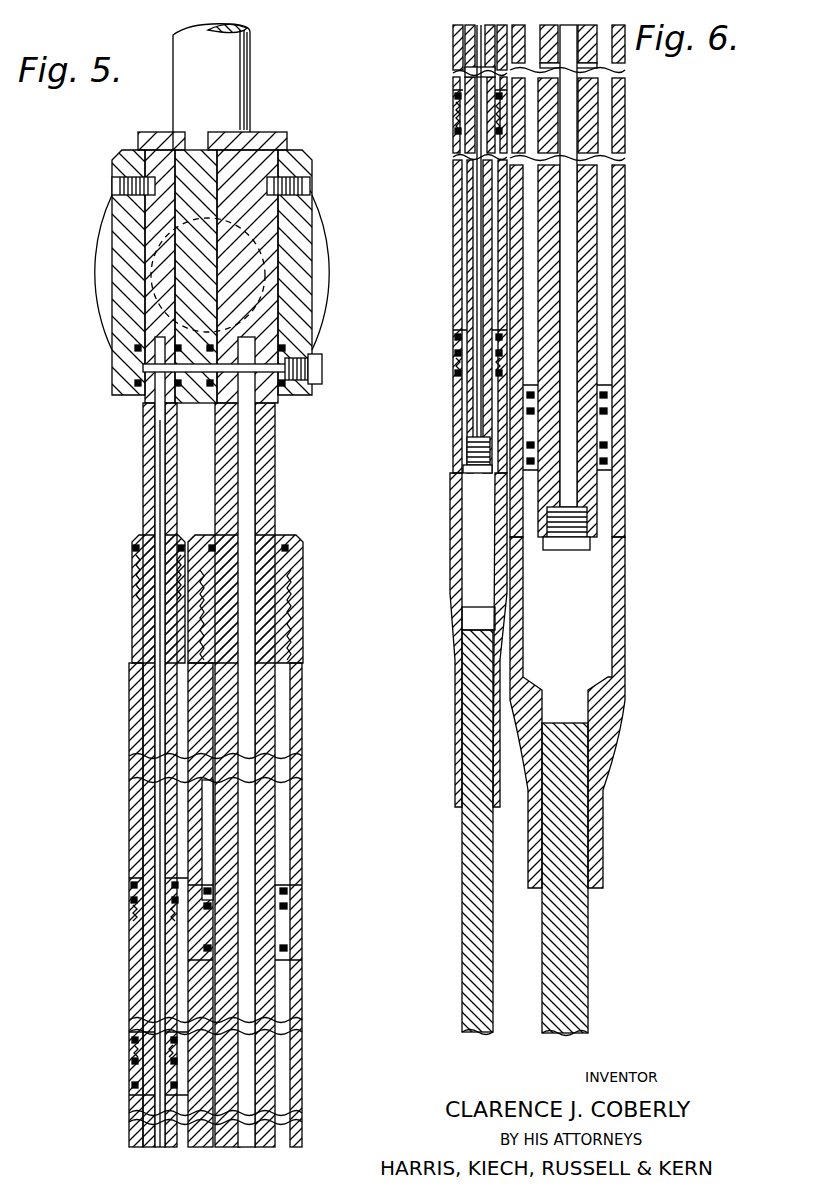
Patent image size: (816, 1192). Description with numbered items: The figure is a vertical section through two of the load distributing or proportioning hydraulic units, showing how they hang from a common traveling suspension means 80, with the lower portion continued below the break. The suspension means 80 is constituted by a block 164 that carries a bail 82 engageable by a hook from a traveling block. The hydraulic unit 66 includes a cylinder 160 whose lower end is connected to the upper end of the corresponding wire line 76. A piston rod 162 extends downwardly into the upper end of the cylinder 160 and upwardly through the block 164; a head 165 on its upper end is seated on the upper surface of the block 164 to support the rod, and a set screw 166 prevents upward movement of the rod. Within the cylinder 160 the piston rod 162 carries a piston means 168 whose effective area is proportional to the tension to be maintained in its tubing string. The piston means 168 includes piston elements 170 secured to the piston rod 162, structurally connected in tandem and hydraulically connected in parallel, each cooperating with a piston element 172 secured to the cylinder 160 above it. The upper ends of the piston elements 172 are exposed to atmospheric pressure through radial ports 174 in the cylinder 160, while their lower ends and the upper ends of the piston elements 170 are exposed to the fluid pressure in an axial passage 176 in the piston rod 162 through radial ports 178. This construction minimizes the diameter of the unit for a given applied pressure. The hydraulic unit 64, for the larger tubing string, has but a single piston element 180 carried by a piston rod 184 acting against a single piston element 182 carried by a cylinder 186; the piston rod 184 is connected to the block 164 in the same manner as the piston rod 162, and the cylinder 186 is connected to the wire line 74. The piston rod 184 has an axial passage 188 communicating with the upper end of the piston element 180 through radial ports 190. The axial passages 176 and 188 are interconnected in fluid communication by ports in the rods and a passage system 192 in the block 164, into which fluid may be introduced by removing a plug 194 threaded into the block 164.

In FIG. 5, the bail 82 is at (228, 56).
In FIG. 5, the traveling suspension means 80 is at (318, 148).
In FIG. 5, the head 165 is at (140, 135).
In FIG. 5, the set screw 166 is at (112, 187).
In FIG. 5, the block 164 is at (125, 292).
In FIG. 5, the passage system 192 is at (282, 386).
In FIG. 5, the plug 194 is at (323, 368).
In FIG. 5, the axial passage 188 is at (250, 455).
In FIG. 6, the axial passage 188 is at (576, 320).
In FIG. 5, the piston rod 162 is at (145, 478).
In FIG. 6, the piston rod 162 is at (470, 210).
In FIG. 5, the axial passage 176 is at (159, 490).
In FIG. 6, the axial passage 176 is at (478, 240).
In FIG. 5, the cylinder 160 is at (130, 680).
In FIG. 6, the cylinder 160 is at (456, 285).
In FIG. 5, the hydraulic unit 66 is at (128, 727).
In FIG. 6, the hydraulic unit 66 is at (450, 402).
In FIG. 5, the hydraulic unit 64 is at (305, 680).
In FIG. 6, the hydraulic unit 64 is at (624, 292).
In FIG. 5, the cylinder 186 is at (296, 800).
In FIG. 6, the cylinder 186 is at (615, 342).
In FIG. 5, the piston rod 184 is at (262, 850).
In FIG. 6, the piston rod 184 is at (588, 250).
In FIG. 5, the piston element 182 is at (292, 925).
In FIG. 5, the radial ports 174 is at (132, 887).
In FIG. 6, the radial ports 174 is at (456, 96).
In FIG. 5, the piston elements 172 is at (132, 913).
In FIG. 6, the piston elements 172 is at (456, 125).
In FIG. 5, the radial ports 178 is at (133, 1038).
In FIG. 6, the radial ports 178 is at (457, 337).
In FIG. 5, the piston elements 170 is at (133, 1061).
In FIG. 6, the piston elements 170 is at (457, 371).
In FIG. 5, the piston means 168 is at (134, 1085).
In FIG. 6, the radial ports 190 is at (598, 386).
In FIG. 6, the piston element 180 is at (612, 420).
In FIG. 6, the wire line 76 is at (470, 960).
In FIG. 6, the wire line 74 is at (578, 960).